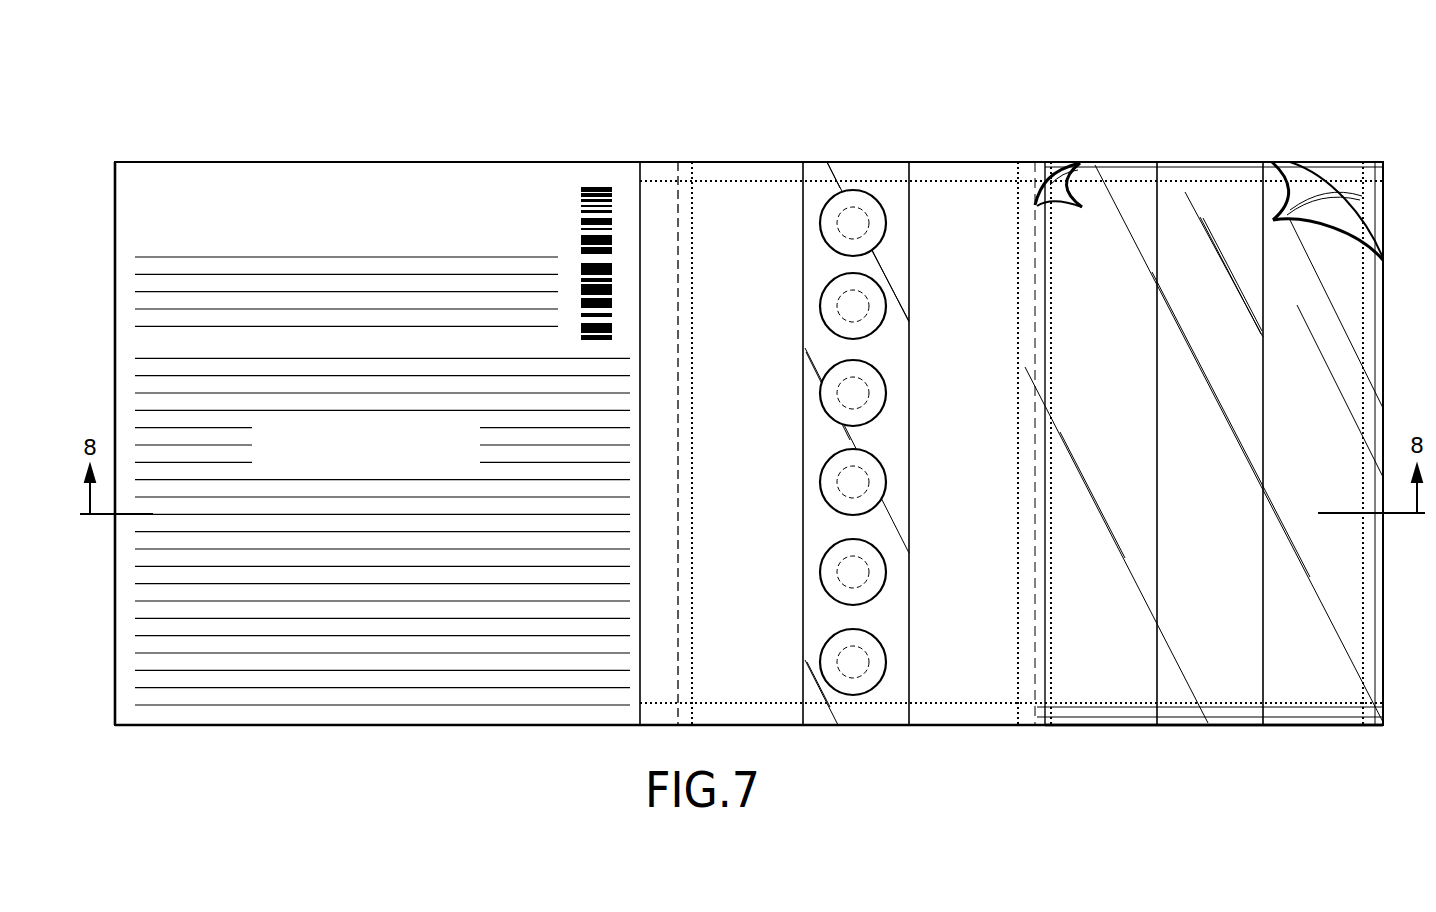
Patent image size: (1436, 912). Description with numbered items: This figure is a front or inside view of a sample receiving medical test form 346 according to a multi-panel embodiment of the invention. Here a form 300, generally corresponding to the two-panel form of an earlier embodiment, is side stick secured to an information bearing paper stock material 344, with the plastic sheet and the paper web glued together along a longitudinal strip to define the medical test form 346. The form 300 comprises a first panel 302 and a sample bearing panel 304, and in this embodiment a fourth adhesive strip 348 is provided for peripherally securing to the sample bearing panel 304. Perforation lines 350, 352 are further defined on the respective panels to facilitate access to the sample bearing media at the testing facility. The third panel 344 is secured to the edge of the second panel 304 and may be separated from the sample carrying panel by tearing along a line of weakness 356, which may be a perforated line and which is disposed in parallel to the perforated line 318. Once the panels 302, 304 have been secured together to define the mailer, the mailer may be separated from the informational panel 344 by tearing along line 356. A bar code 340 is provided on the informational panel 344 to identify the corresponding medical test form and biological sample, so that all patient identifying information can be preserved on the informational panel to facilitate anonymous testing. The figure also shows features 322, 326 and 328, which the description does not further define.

The form 300 is at (1085, 770).
The first panel 302 is at (1200, 730).
The sample bearing panel 304 is at (878, 728).
The perforated line 318 is at (692, 297).
The binder holes 322 is at (820, 317).
The adhesive panel 326 is at (1215, 185).
The laminate panel 328 is at (812, 195).
The bar code 340 is at (565, 187).
The information bearing paper stock material 344 is at (358, 150).
The medical test form 346 is at (263, 102).
The fourth adhesive strip 348 is at (1048, 338).
The perforation line 350 is at (1050, 292).
The perforation line 352 is at (1017, 240).
The line of weakness 356 is at (678, 207).